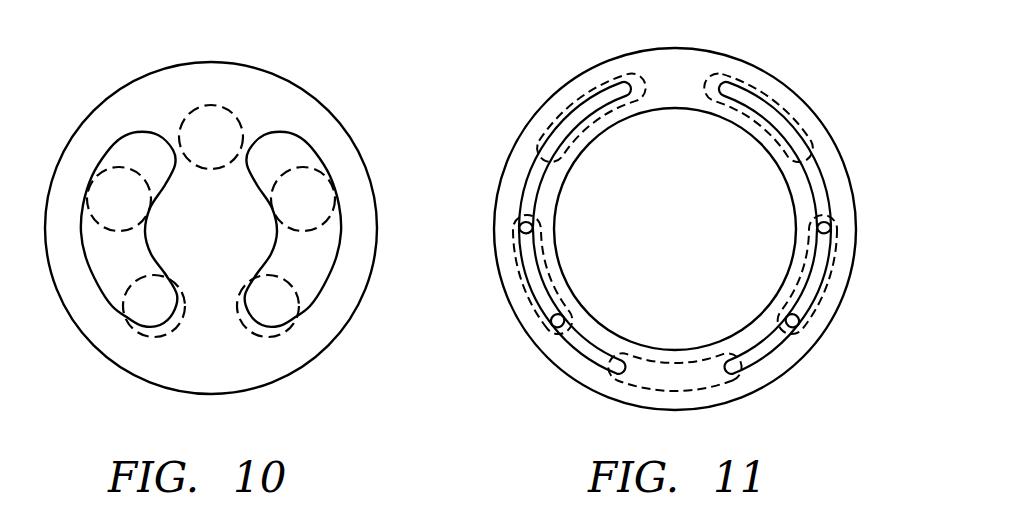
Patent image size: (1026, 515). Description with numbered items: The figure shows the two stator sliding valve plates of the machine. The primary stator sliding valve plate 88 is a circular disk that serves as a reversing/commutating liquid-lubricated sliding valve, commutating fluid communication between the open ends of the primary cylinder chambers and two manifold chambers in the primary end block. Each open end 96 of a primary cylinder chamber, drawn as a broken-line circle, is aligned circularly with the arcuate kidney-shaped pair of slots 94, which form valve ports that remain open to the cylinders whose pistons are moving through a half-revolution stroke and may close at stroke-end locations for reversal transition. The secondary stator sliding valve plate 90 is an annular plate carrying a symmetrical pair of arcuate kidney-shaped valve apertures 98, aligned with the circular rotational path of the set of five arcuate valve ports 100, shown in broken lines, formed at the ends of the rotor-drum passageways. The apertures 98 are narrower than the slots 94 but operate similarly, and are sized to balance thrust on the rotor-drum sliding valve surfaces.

In FIG. 10, the primary stator sliding valve plate 88 is at (157, 93).
In FIG. 10, the arcuate kidney-shaped pair of slots 94 is at (248, 340).
In FIG. 10, the open end of primary cylinder chamber 96 is at (218, 118).
In FIG. 11, the secondary stator sliding valve plate 90 is at (662, 67).
In FIG. 11, the arcuate kidney-shaped valve apertures 98 is at (592, 358).
In FIG. 11, the arcuate valve ports 100 is at (695, 390).